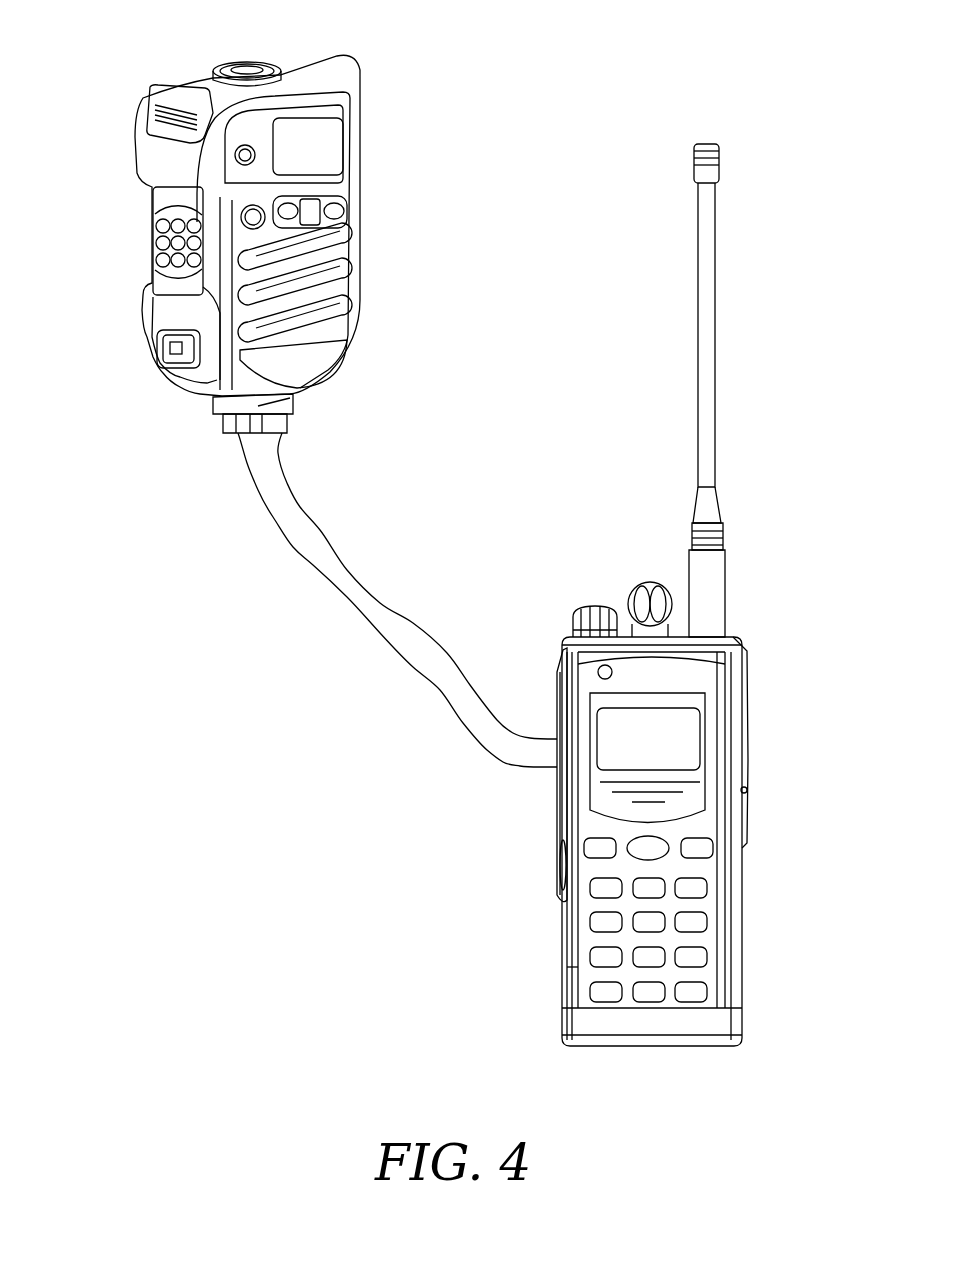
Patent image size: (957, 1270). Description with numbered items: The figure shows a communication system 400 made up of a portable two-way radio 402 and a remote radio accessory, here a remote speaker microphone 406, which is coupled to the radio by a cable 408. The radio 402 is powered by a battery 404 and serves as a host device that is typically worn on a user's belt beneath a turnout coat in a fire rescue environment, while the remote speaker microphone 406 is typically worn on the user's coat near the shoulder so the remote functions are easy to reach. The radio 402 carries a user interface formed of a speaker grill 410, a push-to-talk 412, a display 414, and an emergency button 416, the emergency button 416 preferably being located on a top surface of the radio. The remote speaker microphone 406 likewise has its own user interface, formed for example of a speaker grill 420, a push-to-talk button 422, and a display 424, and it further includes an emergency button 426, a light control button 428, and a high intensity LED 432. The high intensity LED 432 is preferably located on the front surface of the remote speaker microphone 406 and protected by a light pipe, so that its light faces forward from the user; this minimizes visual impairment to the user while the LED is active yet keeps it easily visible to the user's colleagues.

The communication system 400 is at (845, 1128).
The portable two-way radio 402 is at (688, 595).
The battery 404 is at (733, 1029).
The remote speaker microphone 406 is at (249, 229).
The cable 408 is at (352, 572).
The speaker grill 410 is at (670, 793).
The push-to-talk 412 is at (748, 762).
The display 414 is at (673, 730).
The emergency button 416 is at (620, 636).
The speaker grill 420 is at (333, 280).
The push-to-talk button 422 is at (158, 246).
The display 424 is at (313, 138).
The emergency button 426 is at (248, 72).
The light control button 428 is at (243, 216).
The high intensity LED 432 is at (235, 154).